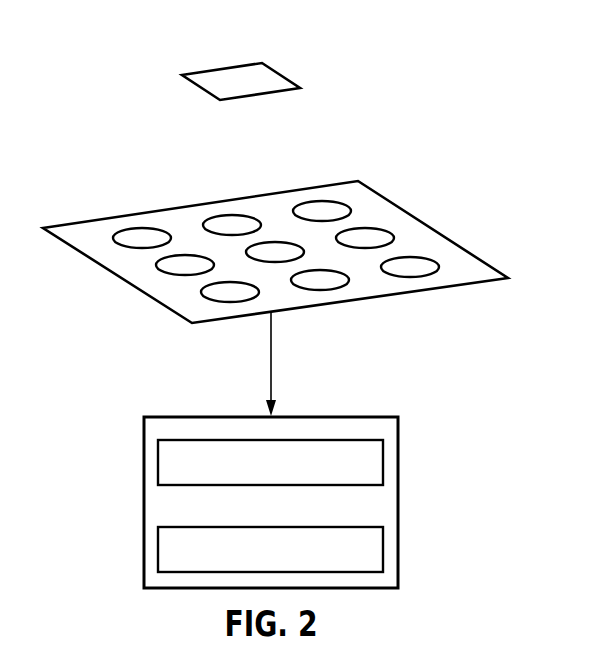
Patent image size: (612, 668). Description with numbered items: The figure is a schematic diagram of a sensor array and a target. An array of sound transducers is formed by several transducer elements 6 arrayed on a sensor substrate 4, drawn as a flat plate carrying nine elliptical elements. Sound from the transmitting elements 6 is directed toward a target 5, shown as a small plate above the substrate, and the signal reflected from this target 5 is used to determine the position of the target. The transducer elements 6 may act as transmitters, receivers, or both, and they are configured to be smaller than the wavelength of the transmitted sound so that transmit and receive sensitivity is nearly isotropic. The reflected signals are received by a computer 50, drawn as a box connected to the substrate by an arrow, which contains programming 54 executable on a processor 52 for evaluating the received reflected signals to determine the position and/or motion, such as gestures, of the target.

The sensor substrate 4 is at (110, 283).
The target 5 is at (270, 66).
The transducer elements 6 is at (350, 291).
The computer 50 is at (144, 443).
The processor 52 is at (385, 456).
The programming 54 is at (385, 546).